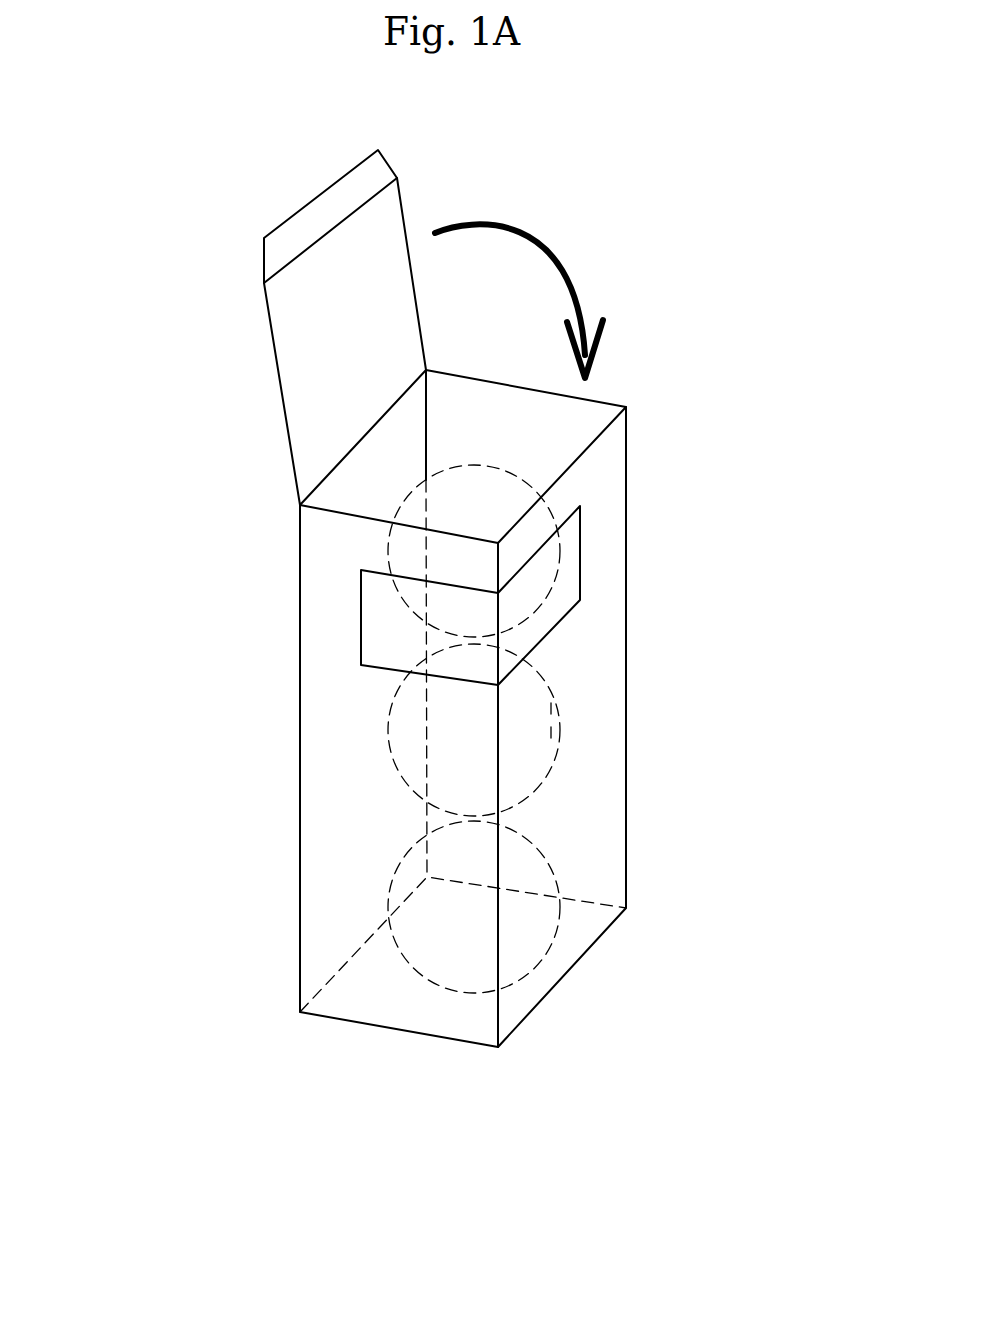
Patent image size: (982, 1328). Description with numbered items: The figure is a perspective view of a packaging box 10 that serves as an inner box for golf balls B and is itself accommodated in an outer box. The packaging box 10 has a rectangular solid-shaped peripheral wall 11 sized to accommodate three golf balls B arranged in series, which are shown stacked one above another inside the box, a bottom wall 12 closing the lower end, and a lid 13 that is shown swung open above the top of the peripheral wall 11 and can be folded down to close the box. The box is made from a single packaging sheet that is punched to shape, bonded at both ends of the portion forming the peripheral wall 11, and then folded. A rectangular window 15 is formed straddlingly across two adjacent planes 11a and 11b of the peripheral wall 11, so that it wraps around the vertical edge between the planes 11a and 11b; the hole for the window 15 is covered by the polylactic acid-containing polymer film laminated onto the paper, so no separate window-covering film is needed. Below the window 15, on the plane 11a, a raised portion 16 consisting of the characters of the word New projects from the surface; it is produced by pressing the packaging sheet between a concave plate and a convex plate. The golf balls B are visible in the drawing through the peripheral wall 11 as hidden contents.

The packaging box 10 is at (424, 659).
The peripheral wall 11 is at (465, 708).
The plane of the peripheral wall 11a is at (593, 668).
The plane of the peripheral wall 11b is at (322, 829).
The bottom wall 12 is at (400, 985).
The lid 13 is at (307, 330).
The rectangular window 15 is at (356, 595).
The raised portion 16 is at (507, 714).
The golf ball B is at (505, 512).